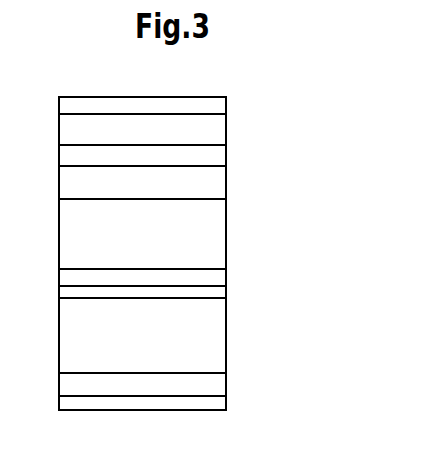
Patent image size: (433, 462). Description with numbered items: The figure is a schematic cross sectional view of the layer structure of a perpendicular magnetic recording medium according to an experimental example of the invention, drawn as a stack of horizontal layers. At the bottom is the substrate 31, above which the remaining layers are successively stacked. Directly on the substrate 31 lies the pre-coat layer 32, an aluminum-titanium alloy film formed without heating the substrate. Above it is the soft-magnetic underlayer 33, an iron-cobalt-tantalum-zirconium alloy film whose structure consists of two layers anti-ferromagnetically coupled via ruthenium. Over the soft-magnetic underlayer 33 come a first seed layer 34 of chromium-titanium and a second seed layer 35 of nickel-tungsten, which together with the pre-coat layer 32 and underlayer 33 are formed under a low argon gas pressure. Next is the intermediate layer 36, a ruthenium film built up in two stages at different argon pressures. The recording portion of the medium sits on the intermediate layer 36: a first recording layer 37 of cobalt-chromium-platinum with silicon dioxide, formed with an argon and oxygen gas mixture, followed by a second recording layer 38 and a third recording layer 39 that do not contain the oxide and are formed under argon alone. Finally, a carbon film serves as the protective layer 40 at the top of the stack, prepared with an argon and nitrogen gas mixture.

The substrate 31 is at (217, 400).
The pre-coat layer 32 is at (215, 388).
The soft-magnetic underlayer 33 is at (218, 355).
The first seed layer 34 is at (213, 292).
The second seed layer 35 is at (213, 276).
The intermediate layer 36 is at (213, 233).
The first recording layer 37 is at (213, 178).
The second recording layer 38 is at (213, 157).
The third recording layer 39 is at (213, 127).
The protective layer 40 is at (213, 108).